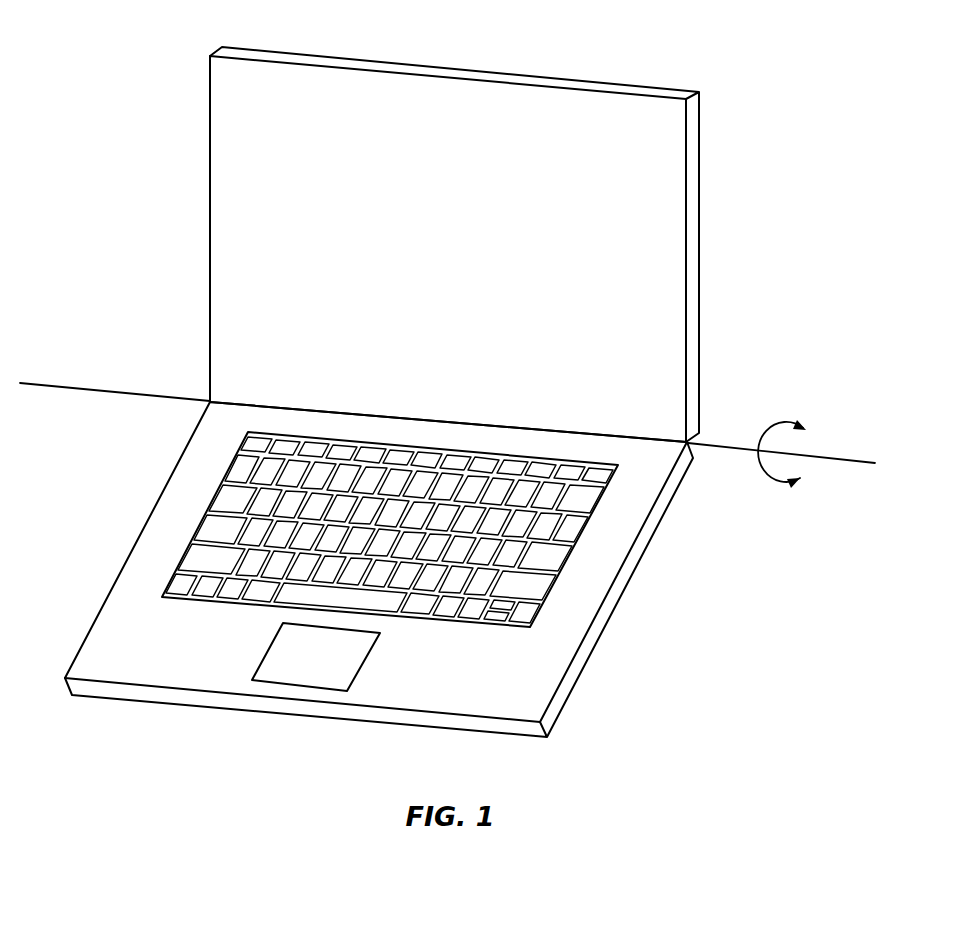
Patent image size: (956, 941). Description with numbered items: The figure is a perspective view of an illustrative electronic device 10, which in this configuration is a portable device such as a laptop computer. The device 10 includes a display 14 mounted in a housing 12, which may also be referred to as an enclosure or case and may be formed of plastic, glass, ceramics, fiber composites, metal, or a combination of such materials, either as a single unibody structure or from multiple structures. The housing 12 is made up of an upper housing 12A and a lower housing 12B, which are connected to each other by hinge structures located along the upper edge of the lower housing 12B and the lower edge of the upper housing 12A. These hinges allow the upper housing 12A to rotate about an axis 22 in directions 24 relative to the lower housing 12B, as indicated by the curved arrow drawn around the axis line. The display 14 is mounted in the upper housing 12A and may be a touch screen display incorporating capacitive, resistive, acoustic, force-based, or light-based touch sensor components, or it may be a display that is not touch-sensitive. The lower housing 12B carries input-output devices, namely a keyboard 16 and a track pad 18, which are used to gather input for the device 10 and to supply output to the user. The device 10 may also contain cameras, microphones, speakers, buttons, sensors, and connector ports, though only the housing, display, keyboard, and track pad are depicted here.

The electronic device 10 is at (758, 57).
The housing 12 is at (700, 375).
The upper housing 12A is at (196, 58).
The lower housing 12B is at (188, 408).
The display 14 is at (600, 238).
The keyboard 16 is at (575, 565).
The track pad 18 is at (325, 690).
The axis 22 is at (35, 382).
The directions 24 is at (778, 488).